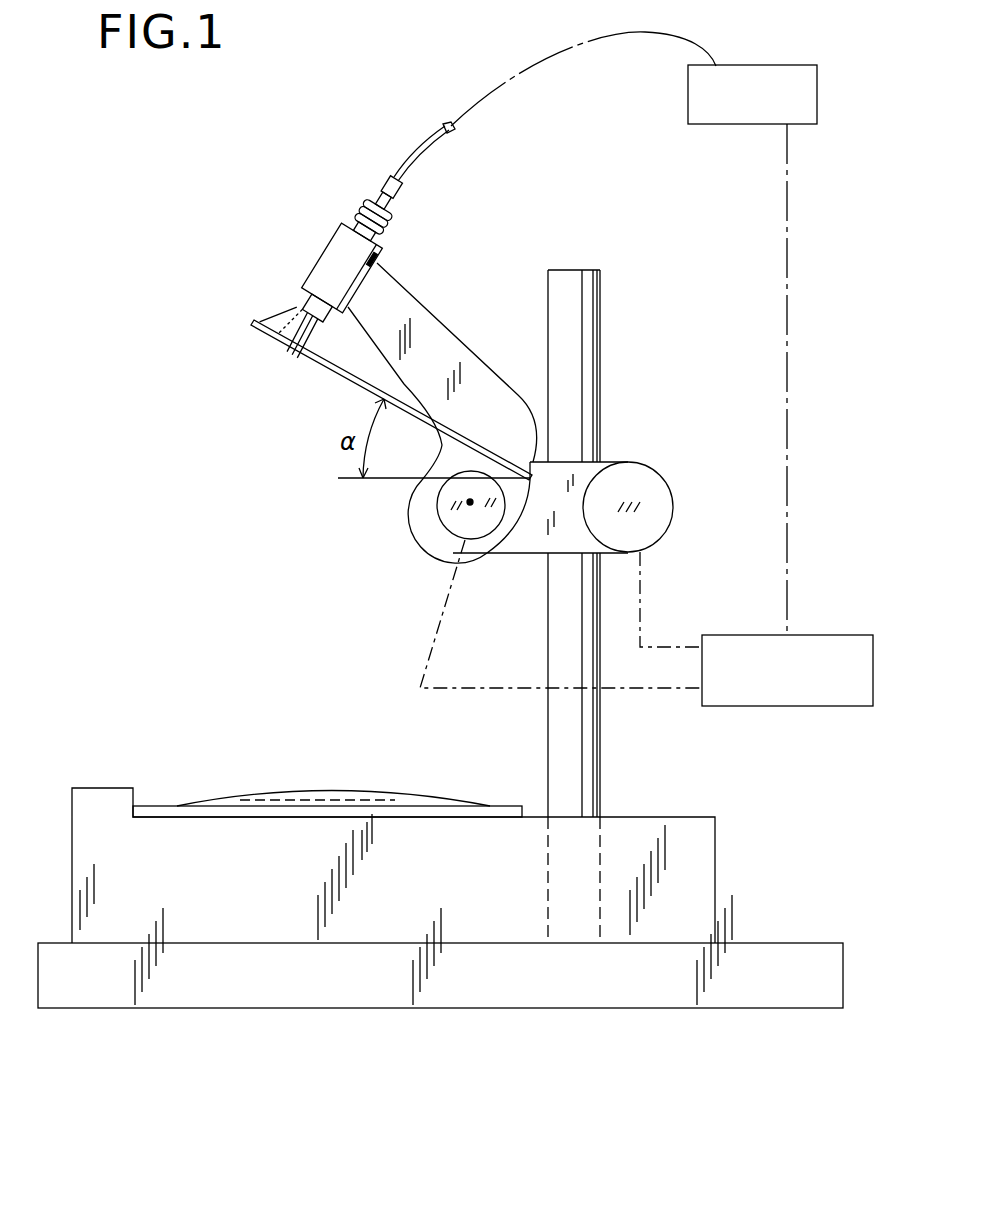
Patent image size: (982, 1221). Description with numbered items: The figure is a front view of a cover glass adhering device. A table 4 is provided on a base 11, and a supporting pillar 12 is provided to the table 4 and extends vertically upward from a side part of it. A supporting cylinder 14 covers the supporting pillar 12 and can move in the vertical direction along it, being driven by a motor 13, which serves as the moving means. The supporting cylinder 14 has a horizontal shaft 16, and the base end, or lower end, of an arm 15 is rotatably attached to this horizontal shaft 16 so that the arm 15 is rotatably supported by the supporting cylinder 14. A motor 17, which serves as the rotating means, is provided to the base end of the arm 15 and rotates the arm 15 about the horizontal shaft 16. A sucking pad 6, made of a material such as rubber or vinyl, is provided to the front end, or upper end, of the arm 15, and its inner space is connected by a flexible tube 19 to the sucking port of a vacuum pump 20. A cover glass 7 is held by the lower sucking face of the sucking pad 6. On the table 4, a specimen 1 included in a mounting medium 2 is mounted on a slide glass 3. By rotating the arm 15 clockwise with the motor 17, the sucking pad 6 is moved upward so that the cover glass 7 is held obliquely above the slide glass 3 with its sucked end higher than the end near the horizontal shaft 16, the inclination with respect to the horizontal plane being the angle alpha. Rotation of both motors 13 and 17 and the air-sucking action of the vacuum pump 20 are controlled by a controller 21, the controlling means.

The specimen 1 is at (303, 795).
The mounting medium 2 is at (362, 790).
The slide glass 3 is at (173, 810).
The table 4 is at (702, 885).
The sucking pad 6 is at (283, 320).
The cover glass 7 is at (332, 367).
The base 11 is at (808, 993).
The supporting pillar 12 is at (566, 268).
The motor 13 is at (663, 507).
The supporting cylinder 14 is at (597, 468).
The arm 15 is at (430, 323).
The horizontal shaft 16 is at (463, 503).
The motor 17 is at (483, 540).
The flexible tube 19 is at (422, 145).
The vacuum pump 20 is at (753, 117).
The controller 21 is at (853, 643).